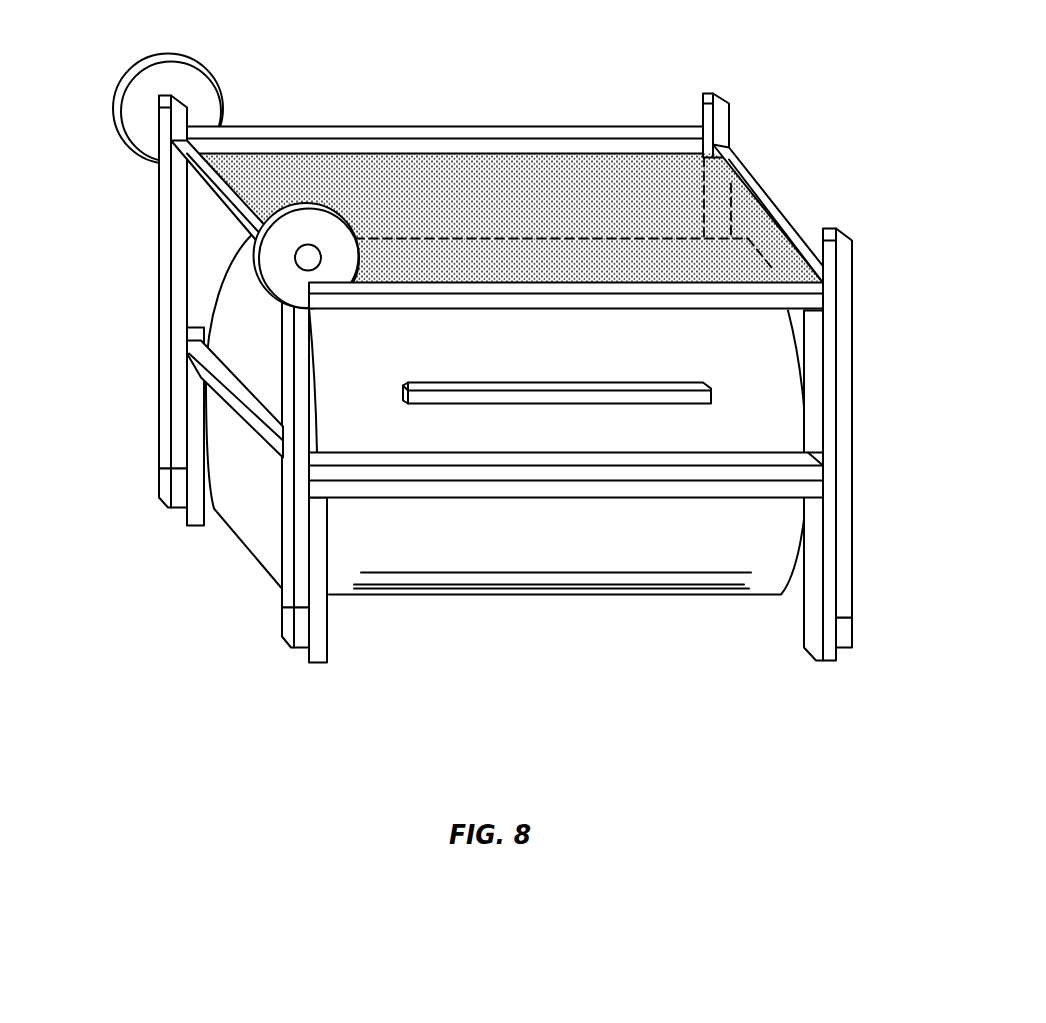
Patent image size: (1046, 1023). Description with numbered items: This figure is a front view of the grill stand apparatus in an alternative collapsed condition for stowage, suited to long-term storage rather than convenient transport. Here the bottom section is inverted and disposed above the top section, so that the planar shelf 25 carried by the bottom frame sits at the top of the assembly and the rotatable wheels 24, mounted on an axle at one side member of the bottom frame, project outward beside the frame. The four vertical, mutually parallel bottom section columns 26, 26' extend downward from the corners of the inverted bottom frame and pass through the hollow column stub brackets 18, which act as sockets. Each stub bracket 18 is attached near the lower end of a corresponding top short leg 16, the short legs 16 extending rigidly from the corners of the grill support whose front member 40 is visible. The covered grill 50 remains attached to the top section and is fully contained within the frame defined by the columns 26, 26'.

The top short leg 16 is at (193, 433).
The column stub bracket 18 is at (158, 493).
The rotatable wheel 24 is at (128, 96).
The planar shelf 25 is at (432, 160).
The bottom section column 26 is at (201, 352).
The bottom section column 26' is at (877, 445).
The front member 40 is at (540, 487).
The grill 50 is at (510, 356).